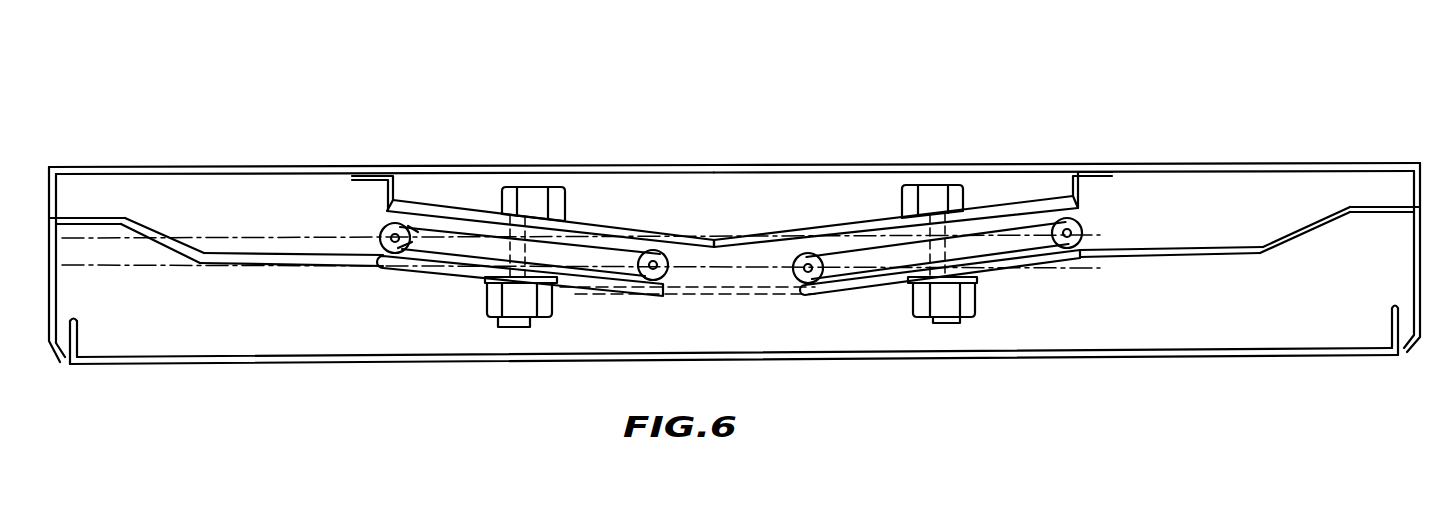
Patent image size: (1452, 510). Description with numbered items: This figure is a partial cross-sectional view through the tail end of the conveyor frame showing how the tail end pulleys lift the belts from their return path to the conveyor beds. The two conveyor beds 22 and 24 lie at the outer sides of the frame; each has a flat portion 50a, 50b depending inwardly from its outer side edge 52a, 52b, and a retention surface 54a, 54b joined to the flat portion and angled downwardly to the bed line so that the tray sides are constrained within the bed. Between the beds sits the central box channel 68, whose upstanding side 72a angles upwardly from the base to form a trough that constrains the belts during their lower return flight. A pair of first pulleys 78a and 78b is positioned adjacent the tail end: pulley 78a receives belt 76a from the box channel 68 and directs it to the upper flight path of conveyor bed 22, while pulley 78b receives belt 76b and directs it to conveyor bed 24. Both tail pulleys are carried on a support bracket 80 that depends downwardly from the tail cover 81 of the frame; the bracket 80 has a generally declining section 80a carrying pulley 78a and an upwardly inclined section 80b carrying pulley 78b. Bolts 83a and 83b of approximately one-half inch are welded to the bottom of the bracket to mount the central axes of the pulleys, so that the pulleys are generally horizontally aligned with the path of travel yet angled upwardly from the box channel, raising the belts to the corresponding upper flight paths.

The conveyor bed 22 is at (292, 253).
The conveyor bed 24 is at (1160, 258).
The flat portion 50a is at (92, 217).
The flat portion 50b is at (1373, 205).
The side edge 52a is at (47, 167).
The side edge 52b is at (1427, 205).
The retention surface 54a is at (163, 237).
The retention surface 54b is at (1297, 242).
The central box channel 68 is at (690, 293).
The upstanding side 72a is at (610, 240).
The belt 76a is at (382, 229).
The belt 76b is at (790, 272).
The first pulley 78a is at (420, 275).
The first pulley 78b is at (877, 287).
The support bracket 80 is at (732, 181).
The declining section 80a is at (442, 207).
The upwardly inclined section 80b is at (855, 217).
The tail cover 81 is at (1063, 165).
The bolt 83a is at (528, 188).
The bolt 83b is at (930, 190).